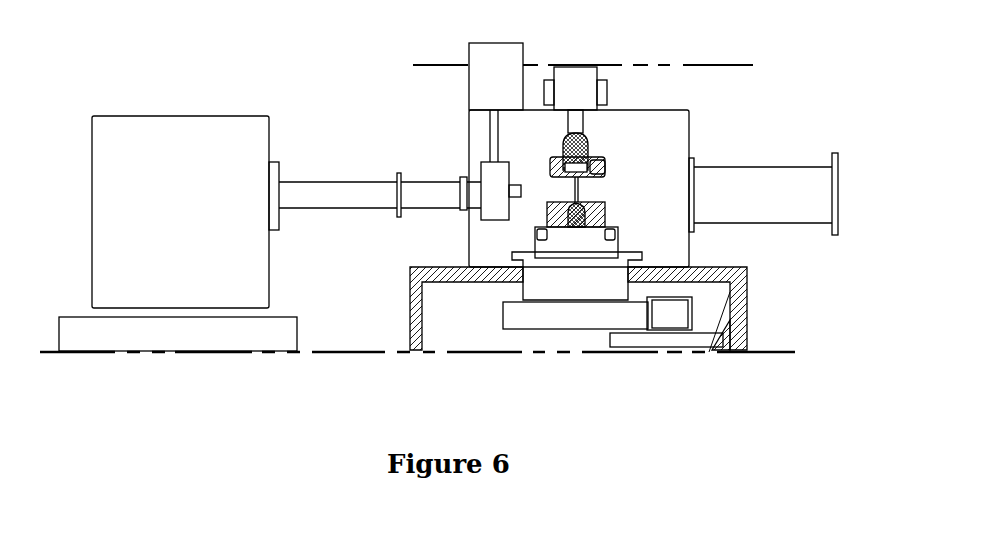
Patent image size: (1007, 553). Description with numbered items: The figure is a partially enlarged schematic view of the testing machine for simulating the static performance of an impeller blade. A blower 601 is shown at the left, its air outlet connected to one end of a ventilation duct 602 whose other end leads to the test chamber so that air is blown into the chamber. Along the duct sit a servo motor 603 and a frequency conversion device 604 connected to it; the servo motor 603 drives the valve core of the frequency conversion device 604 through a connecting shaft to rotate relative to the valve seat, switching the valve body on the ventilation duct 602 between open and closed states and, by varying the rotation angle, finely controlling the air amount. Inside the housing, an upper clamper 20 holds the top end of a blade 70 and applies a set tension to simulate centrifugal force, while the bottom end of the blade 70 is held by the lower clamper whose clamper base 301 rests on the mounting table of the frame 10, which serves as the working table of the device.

The blower 601 is at (115, 132).
The ventilation duct 602 is at (347, 193).
The servo motor 603 is at (505, 58).
The frequency conversion device 604 is at (496, 180).
The upper clamper 20 is at (577, 123).
The blade 70 is at (585, 191).
The clamper base 301 is at (596, 243).
The frame 10 is at (744, 298).